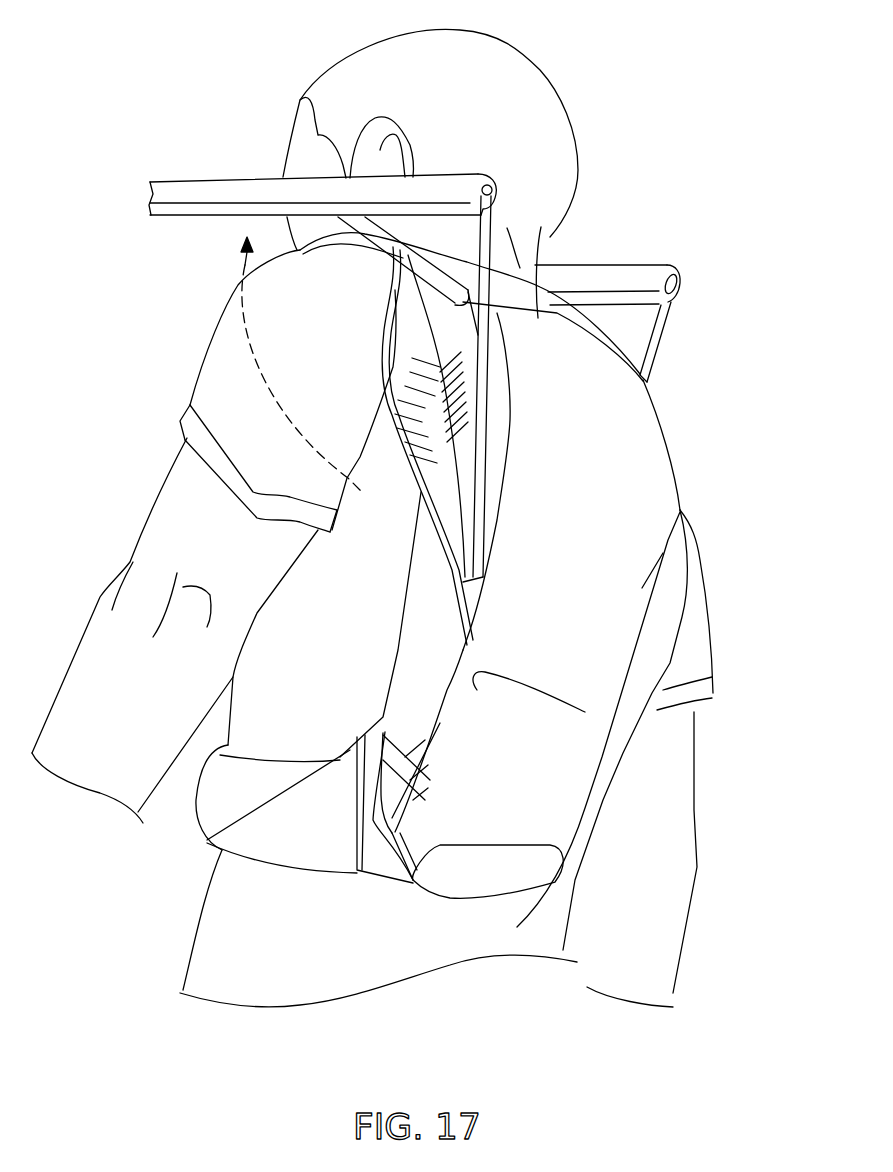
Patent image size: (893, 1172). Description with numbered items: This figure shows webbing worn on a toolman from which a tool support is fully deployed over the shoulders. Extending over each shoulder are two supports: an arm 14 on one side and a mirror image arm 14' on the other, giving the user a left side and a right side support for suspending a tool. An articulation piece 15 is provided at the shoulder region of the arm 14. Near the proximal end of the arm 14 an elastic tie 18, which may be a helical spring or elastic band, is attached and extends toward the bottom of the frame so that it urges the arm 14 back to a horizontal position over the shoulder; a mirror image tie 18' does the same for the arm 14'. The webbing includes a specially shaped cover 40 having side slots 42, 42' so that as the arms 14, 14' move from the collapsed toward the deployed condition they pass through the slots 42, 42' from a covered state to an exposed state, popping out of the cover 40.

The arm 14 is at (322, 172).
The mirror image arm 14' is at (607, 256).
The articulation piece 15 is at (372, 250).
The elastic tie 18 is at (547, 373).
The mirror image tie 18' is at (695, 341).
The cover 40 is at (627, 620).
The side slots 42 is at (597, 481).
The side slot 42' is at (643, 719).